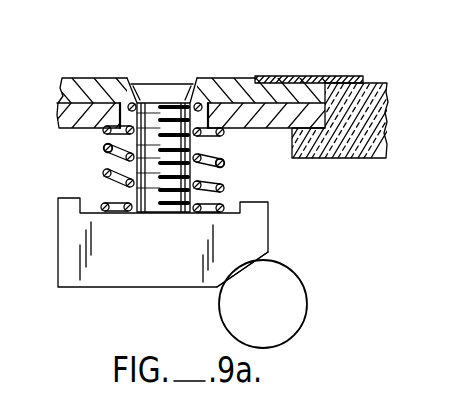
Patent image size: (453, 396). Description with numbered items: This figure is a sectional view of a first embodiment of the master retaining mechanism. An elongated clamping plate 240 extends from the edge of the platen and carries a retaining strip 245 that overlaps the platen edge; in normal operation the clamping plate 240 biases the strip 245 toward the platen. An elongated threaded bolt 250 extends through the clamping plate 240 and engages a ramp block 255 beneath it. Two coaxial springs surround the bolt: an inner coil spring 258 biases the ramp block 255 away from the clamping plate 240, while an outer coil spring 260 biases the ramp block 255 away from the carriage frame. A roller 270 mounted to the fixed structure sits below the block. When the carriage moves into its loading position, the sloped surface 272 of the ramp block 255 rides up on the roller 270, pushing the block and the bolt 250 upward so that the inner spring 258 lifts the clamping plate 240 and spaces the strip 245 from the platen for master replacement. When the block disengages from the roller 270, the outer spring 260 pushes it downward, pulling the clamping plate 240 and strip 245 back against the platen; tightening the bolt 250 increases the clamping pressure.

The clamping plate 240 is at (86, 78).
The retaining strip 245 is at (288, 76).
The inner coil spring 258 is at (190, 98).
The threaded bolt 250 is at (203, 168).
The outer coil spring 260 is at (102, 148).
The ramp block 255 is at (255, 234).
The sloped surface 272 is at (258, 258).
The roller 270 is at (288, 320).